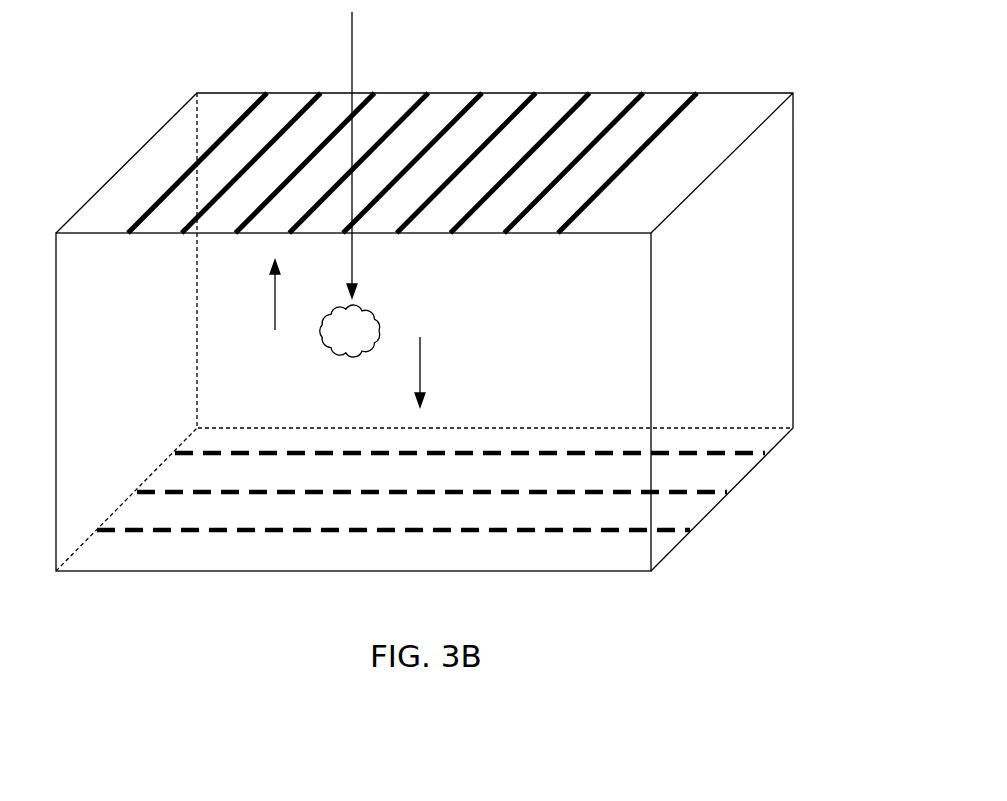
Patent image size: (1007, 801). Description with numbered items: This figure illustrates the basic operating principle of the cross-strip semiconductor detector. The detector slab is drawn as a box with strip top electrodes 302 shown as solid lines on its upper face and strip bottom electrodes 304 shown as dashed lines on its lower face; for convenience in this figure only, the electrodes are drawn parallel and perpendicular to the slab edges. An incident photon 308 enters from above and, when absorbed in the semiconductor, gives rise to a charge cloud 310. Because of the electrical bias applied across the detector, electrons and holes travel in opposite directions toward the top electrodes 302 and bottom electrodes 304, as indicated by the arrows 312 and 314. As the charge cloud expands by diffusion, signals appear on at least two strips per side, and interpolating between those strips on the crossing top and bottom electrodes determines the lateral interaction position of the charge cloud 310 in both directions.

The top electrodes 302 is at (693, 123).
The bottom electrodes 304 is at (195, 543).
The incident photon 308 is at (352, 48).
The charge cloud 310 is at (377, 312).
The arrow indicating electron travel 312 is at (273, 307).
The arrow indicating hole travel 314 is at (422, 370).